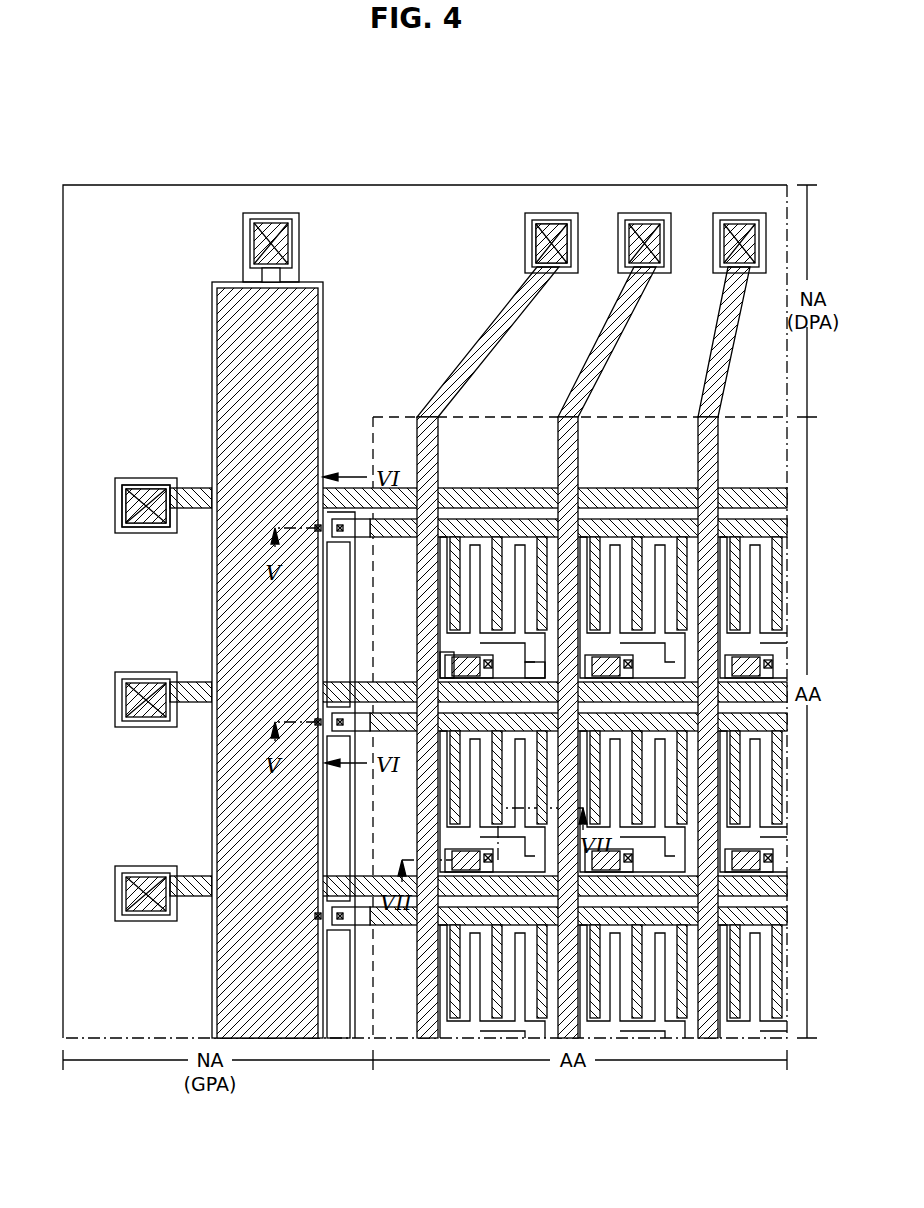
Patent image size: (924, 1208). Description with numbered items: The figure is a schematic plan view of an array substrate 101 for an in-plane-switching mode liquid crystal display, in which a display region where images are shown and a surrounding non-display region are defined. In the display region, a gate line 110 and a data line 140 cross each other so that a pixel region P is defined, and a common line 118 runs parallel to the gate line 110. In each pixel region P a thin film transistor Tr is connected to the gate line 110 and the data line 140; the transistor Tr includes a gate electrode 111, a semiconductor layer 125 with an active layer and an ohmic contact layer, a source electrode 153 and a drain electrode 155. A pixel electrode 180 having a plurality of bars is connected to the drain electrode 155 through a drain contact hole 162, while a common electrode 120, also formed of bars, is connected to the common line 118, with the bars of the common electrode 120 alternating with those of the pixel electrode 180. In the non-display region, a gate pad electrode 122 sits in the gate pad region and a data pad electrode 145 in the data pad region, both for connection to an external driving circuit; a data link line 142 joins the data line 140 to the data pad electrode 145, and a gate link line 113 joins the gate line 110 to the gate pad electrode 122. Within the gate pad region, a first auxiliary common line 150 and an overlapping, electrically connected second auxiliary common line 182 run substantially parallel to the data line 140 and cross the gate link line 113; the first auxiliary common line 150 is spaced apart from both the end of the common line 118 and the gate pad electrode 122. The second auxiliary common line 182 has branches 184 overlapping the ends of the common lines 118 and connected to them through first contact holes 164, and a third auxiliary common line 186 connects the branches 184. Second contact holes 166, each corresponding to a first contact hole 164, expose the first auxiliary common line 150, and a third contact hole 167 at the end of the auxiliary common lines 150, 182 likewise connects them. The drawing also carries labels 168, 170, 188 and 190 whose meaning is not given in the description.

The array substrate 101 is at (731, 144).
The gate line 110 is at (457, 492).
The gate electrode 111 is at (466, 656).
The gate link line 113 is at (190, 517).
The common line 118 is at (500, 550).
The common electrode 120 is at (527, 550).
The gate pad electrode 122 is at (145, 490).
The semiconductor layer 125 is at (442, 663).
The data line 140 is at (425, 815).
The data link line 142 is at (617, 327).
The data pad electrode 145 is at (563, 243).
The first auxiliary common line 150 is at (210, 325).
The source electrode 153 is at (462, 680).
The drain electrode 155 is at (486, 680).
The drain contact hole 162 is at (492, 859).
The first contact hole 164 is at (338, 926).
The second contact hole 166 is at (313, 918).
The third contact hole 167 is at (301, 240).
The gate pad contact hole 168 is at (126, 479).
The data pad electrode 170 is at (522, 240).
The pixel electrode 180 is at (612, 545).
The second auxiliary common line 182 is at (210, 347).
The branch 184 is at (331, 543).
The third auxiliary common line 186 is at (357, 554).
The gate pad electrode 188 is at (166, 482).
The passivation layer 190 is at (553, 213).
The thin film transistor Tr is at (493, 665).
The pixel region P is at (683, 645).